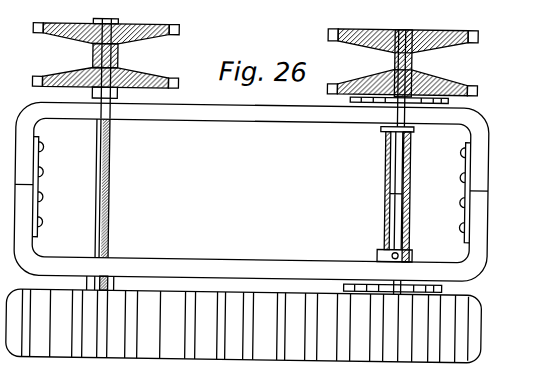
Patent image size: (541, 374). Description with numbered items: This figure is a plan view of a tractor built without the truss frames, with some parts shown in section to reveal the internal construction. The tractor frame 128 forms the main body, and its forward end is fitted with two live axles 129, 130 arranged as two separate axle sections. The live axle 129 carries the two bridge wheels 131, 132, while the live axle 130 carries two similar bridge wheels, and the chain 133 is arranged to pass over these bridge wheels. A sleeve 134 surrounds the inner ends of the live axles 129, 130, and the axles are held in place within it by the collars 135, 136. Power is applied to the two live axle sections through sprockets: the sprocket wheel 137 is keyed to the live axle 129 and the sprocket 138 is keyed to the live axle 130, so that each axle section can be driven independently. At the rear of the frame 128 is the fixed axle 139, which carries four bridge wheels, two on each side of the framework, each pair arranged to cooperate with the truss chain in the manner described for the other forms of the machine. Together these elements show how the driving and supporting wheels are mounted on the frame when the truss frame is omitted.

The tractor frame 128 is at (482, 183).
The live axle 129 is at (392, 158).
The live axle 130 is at (387, 220).
The bridge wheel 131 is at (440, 30).
The bridge wheel 132 is at (440, 86).
The chain 133 is at (457, 334).
The sleeve 134 is at (408, 216).
The collar 135 is at (412, 130).
The collar 136 is at (410, 254).
The sprocket wheel 137 is at (448, 98).
The sprocket 138 is at (443, 288).
The fixed axle 139 is at (102, 210).